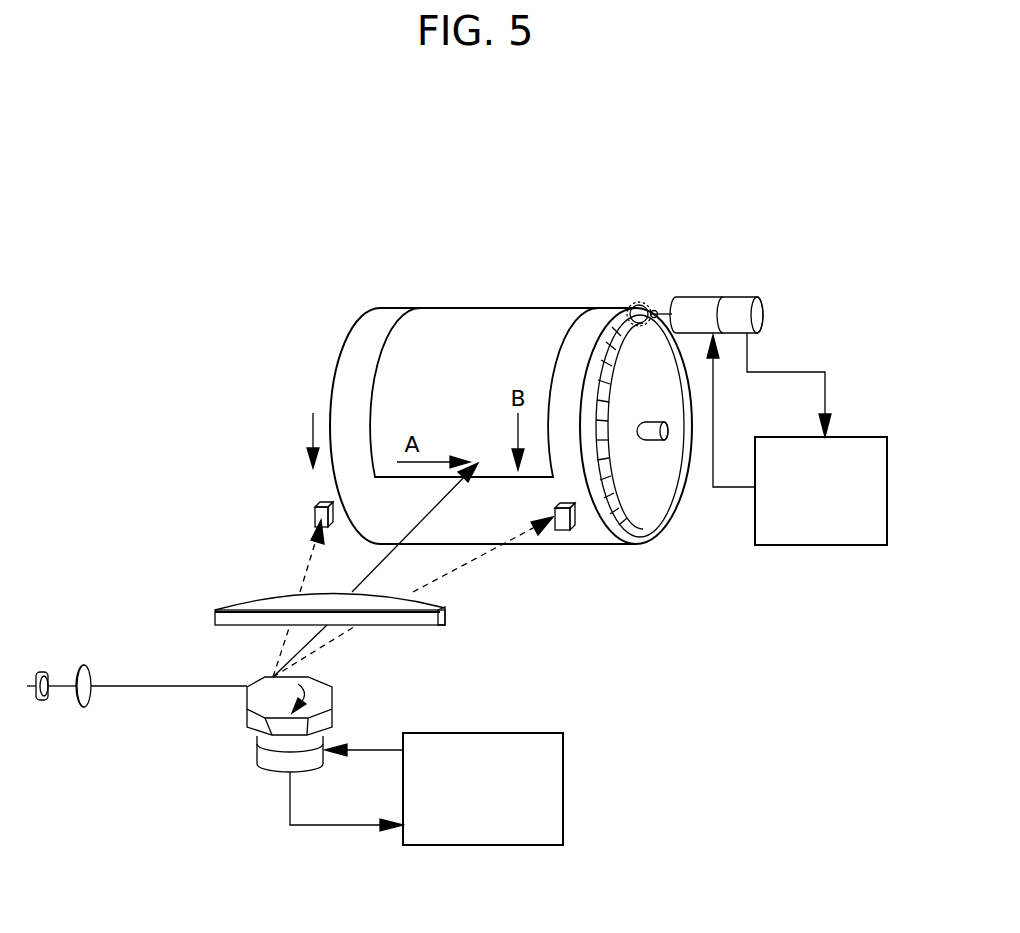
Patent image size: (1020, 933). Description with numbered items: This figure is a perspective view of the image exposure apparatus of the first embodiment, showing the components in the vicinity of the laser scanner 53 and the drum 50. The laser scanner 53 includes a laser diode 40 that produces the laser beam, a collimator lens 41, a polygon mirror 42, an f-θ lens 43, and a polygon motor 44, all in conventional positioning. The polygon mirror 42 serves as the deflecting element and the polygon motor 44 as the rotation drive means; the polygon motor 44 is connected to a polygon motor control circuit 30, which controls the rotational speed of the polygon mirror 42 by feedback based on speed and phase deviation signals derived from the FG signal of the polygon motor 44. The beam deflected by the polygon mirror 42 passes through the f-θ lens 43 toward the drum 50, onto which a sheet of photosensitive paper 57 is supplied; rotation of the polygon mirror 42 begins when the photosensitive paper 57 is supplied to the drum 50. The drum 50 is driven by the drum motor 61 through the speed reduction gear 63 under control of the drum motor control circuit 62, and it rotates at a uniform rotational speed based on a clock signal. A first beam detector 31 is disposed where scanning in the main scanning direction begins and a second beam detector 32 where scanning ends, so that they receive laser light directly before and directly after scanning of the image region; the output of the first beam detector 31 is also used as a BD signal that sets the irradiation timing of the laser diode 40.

The polygon motor control circuit 30 is at (523, 733).
The first beam detector 31 is at (315, 510).
The second beam detector 32 is at (573, 530).
The laser diode 40 is at (45, 672).
The collimator lens 41 is at (92, 680).
The polygon mirror 42 is at (322, 684).
The f-θ lens 43 is at (447, 606).
The polygon motor 44 is at (258, 755).
The drum 50 is at (372, 328).
The laser scanner 53 is at (168, 726).
The photosensitive paper 57 is at (475, 323).
The drum motor 61 is at (717, 300).
The drum motor control circuit 62 is at (853, 437).
The speed reduction gear 63 is at (645, 303).